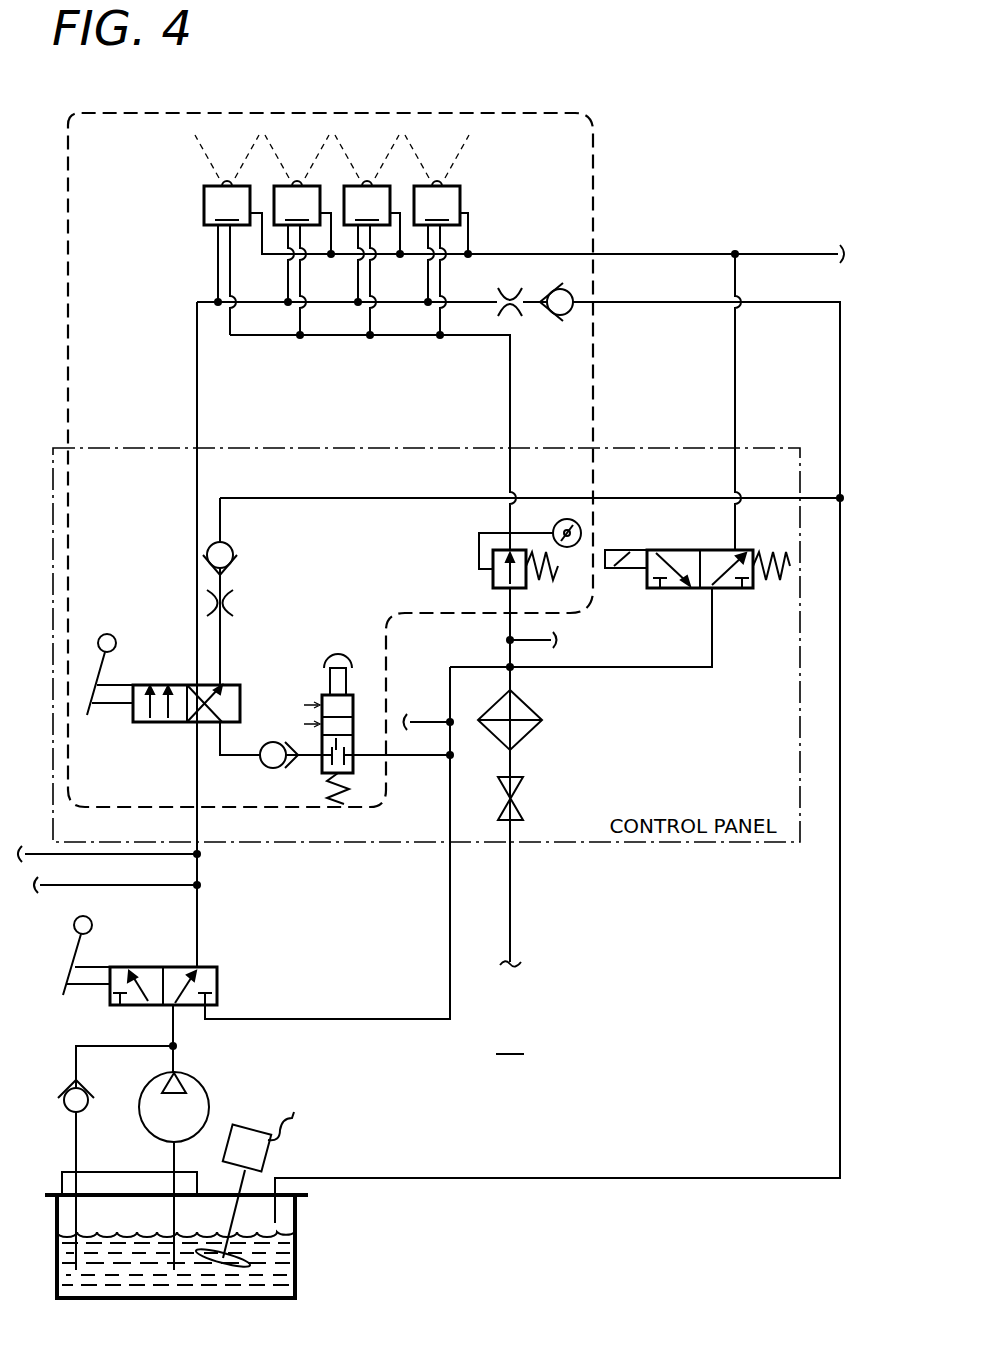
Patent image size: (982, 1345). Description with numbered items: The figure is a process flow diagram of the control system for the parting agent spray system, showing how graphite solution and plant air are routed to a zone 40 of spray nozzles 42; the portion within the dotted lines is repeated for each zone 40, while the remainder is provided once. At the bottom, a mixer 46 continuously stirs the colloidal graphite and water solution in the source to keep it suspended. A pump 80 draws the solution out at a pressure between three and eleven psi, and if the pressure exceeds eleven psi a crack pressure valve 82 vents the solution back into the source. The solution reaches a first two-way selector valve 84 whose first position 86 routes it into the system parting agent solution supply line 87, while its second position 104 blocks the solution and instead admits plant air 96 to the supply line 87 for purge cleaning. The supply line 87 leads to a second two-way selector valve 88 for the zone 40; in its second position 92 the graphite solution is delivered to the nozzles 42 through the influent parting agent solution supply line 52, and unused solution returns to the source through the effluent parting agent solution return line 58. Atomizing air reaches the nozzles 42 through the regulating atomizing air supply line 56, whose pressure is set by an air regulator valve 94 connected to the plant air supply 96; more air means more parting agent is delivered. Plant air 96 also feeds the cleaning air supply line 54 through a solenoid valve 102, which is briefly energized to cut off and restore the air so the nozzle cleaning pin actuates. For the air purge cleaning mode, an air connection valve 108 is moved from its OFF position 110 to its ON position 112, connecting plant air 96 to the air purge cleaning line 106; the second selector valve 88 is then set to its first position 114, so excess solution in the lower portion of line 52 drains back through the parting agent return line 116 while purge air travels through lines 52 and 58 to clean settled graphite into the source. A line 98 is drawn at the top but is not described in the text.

The zone of nozzles 40 is at (186, 208).
The spray nozzles 42 is at (332, 237).
The air supply line 98 is at (465, 216).
The influent parting agent solution supply line 52 is at (197, 385).
The cleaning air supply line 54 is at (737, 400).
The regulating atomizing air supply line 56 is at (512, 410).
The effluent parting agent solution return line 58 is at (842, 402).
The parting agent return line 116 is at (320, 497).
The solenoid valve 102 is at (700, 548).
The air regulator valve 94 is at (493, 581).
The second two-way selector valve 88 is at (186, 685).
The second position 92 is at (133, 722).
The first position 114 is at (240, 688).
The air connection valve 108 is at (354, 700).
The air purge cleaning line 106 is at (250, 757).
The ON position 112 is at (354, 726).
The OFF position 110 is at (321, 772).
The parting agent solution supply line 87 is at (75, 858).
The first two-way selector valve 84 is at (163, 967).
The first position 86 is at (215, 968).
The second position 104 is at (110, 1000).
The crack pressure valve 82 is at (64, 1104).
The pump 80 is at (112, 1172).
The mixer 46 is at (248, 1130).
The plant air supply 96 is at (517, 844).